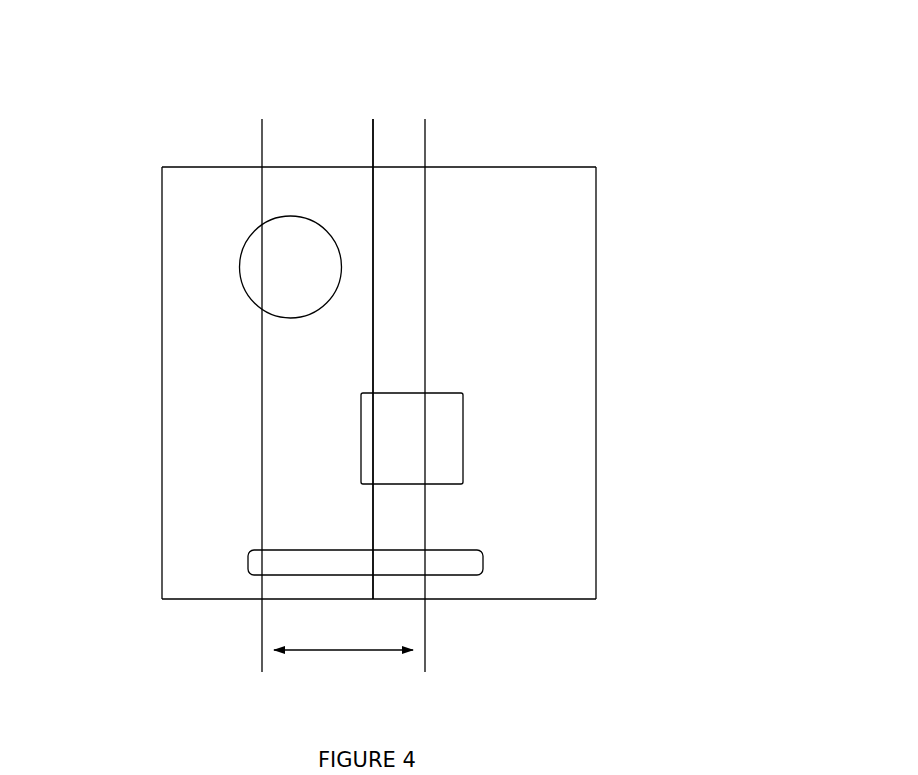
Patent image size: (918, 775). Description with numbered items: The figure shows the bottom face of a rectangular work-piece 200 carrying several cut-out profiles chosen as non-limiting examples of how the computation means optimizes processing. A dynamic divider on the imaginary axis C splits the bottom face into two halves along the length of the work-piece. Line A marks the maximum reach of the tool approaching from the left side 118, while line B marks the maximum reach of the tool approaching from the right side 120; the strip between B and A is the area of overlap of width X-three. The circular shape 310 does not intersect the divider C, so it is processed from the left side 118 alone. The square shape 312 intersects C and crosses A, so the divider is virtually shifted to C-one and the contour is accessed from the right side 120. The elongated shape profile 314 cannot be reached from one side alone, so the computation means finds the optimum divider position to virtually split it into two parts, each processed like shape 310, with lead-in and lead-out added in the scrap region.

The assembly / layout 200 is at (575, 109).
The left side 118 is at (160, 198).
The right side 120 is at (598, 233).
The shape 310 is at (234, 278).
The shape 312 is at (466, 435).
The shape profile 314 is at (246, 562).